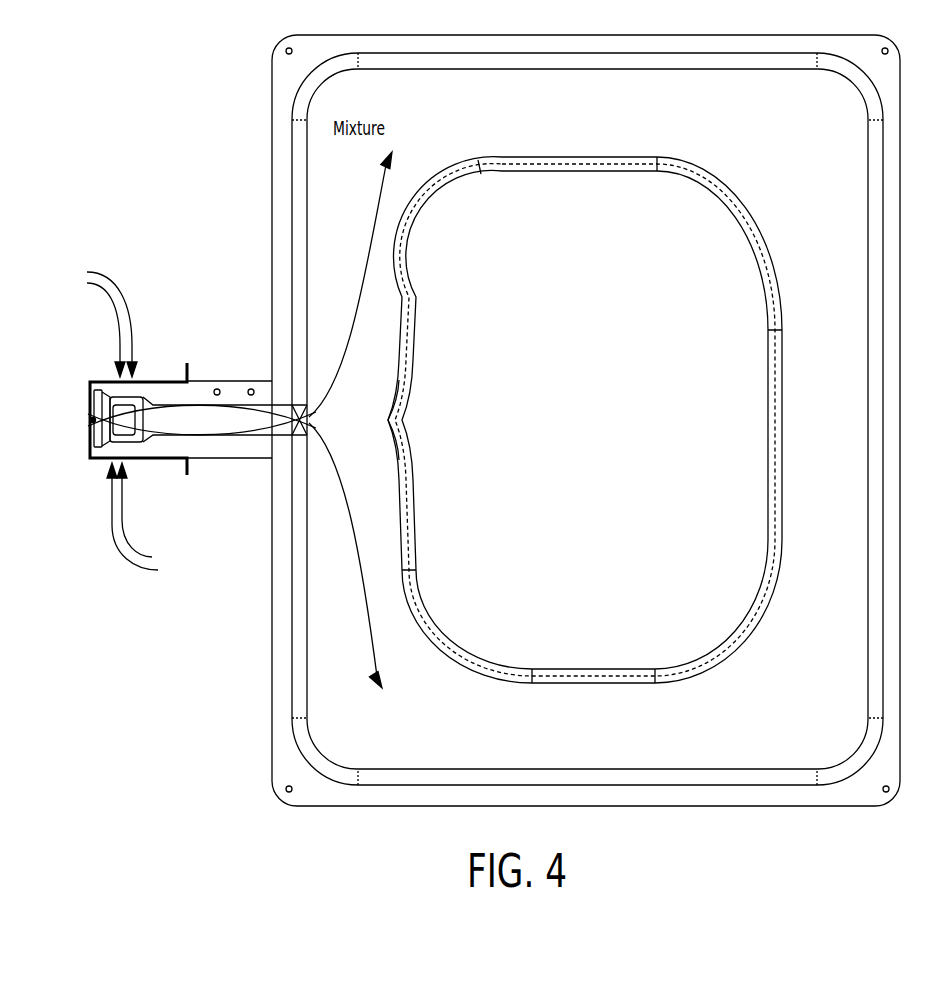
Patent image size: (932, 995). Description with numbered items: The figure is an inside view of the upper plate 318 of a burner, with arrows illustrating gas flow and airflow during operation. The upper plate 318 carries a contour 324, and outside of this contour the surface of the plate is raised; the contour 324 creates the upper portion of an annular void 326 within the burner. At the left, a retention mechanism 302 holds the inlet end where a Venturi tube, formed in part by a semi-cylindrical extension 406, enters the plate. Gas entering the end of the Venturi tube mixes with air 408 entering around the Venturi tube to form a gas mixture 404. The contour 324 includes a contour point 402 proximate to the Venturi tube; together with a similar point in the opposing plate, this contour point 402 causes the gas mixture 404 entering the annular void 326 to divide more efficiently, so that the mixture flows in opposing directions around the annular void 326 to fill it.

The retention mechanism 302 is at (188, 475).
The upper plate 318 is at (755, 808).
The contour 324 is at (479, 173).
The annular void 326 is at (819, 152).
The contour point 402 is at (402, 421).
The gas mixture 404 is at (357, 663).
The semi-cylindrical extension 406 is at (202, 382).
The air 408 is at (103, 272).